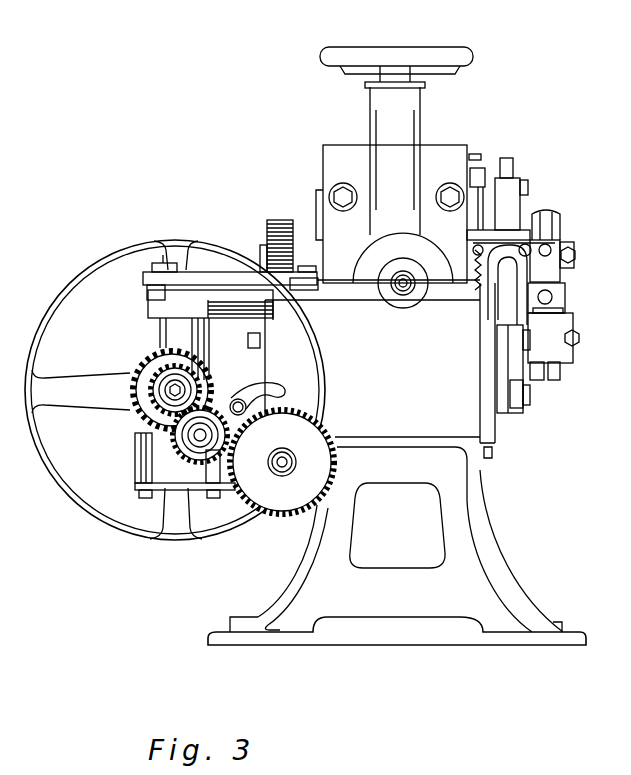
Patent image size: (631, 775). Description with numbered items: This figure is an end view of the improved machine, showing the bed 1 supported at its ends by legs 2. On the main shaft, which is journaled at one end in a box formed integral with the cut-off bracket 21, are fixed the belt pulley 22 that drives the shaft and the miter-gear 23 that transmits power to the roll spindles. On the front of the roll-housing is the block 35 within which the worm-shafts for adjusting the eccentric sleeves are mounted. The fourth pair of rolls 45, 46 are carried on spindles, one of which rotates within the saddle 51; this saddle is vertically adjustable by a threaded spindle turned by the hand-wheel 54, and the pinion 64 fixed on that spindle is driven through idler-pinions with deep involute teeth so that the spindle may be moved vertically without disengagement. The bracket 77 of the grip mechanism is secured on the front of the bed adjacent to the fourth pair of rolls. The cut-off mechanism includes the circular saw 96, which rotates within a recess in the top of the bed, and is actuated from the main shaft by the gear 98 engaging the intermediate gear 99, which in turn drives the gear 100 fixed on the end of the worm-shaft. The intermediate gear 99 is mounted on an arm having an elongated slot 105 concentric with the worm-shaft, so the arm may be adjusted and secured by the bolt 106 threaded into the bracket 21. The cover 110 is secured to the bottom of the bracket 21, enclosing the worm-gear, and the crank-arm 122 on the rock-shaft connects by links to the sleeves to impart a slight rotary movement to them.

The bed 1 is at (468, 422).
The legs 2 is at (497, 568).
The cut-off bracket 21 is at (135, 445).
The pulley 22 is at (62, 286).
The miter-gear 23 is at (140, 362).
The block 35 is at (508, 183).
The roll (fourth pair) 45 is at (558, 223).
The roll (fourth pair) 46 is at (560, 373).
The saddle 51 is at (420, 127).
The hand-wheel 54 is at (415, 48).
The pinion 64 is at (282, 218).
The bracket (grip mechanism) 77 is at (566, 322).
The circular saw 96 is at (428, 253).
The gear 98 is at (160, 402).
The intermediate gear 99 is at (176, 450).
The gear 100 is at (336, 466).
The elongated slot 105 is at (284, 393).
The bolt 106 is at (240, 399).
The cover 110 is at (136, 481).
The crank-arm 122 is at (506, 378).